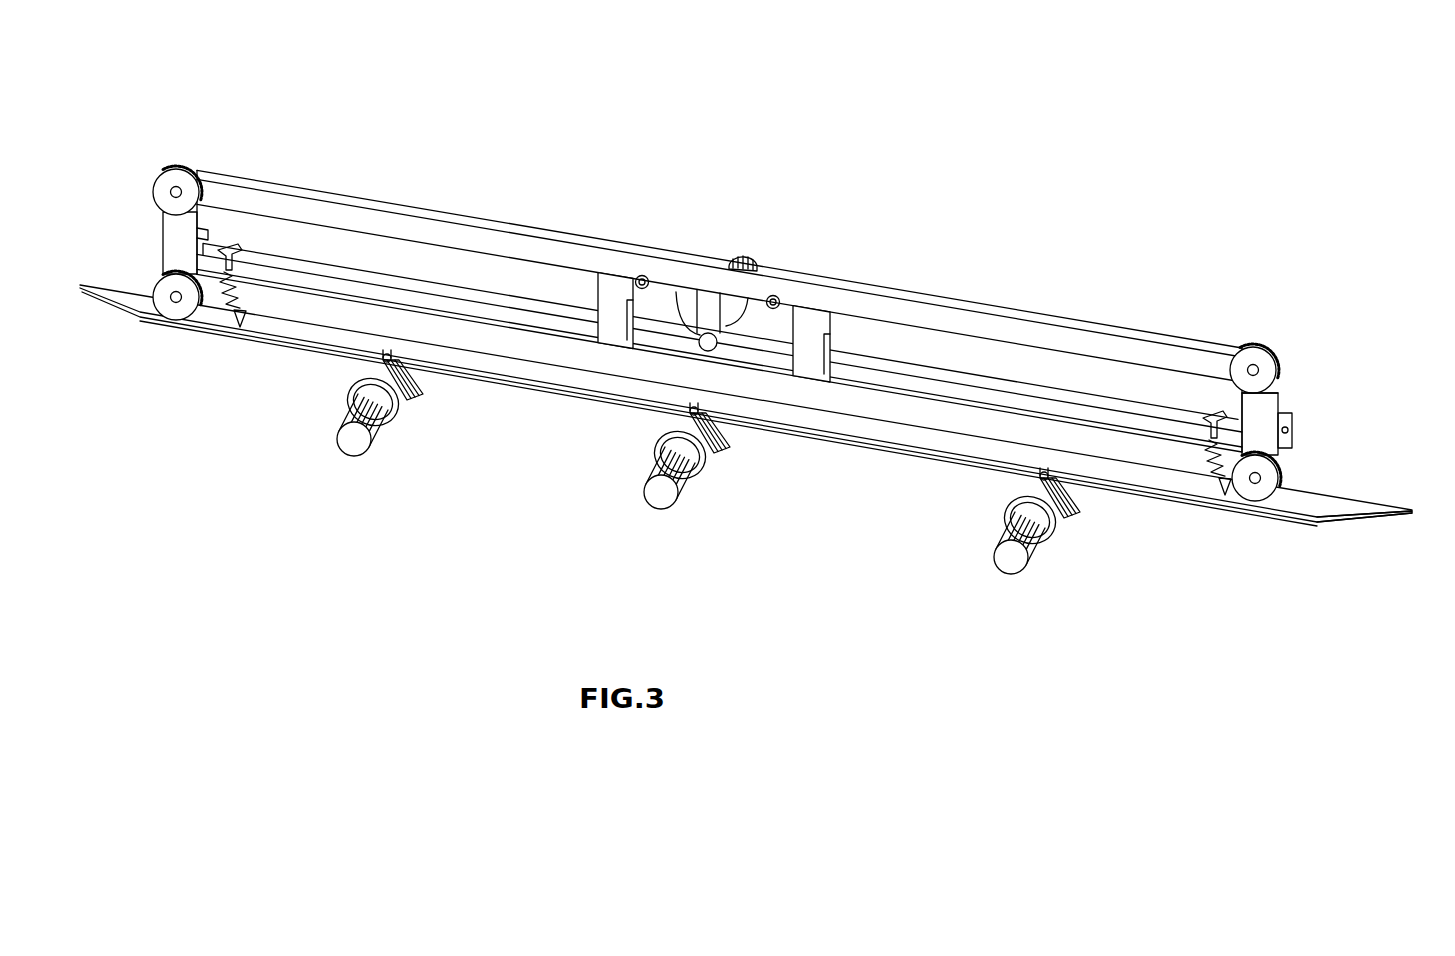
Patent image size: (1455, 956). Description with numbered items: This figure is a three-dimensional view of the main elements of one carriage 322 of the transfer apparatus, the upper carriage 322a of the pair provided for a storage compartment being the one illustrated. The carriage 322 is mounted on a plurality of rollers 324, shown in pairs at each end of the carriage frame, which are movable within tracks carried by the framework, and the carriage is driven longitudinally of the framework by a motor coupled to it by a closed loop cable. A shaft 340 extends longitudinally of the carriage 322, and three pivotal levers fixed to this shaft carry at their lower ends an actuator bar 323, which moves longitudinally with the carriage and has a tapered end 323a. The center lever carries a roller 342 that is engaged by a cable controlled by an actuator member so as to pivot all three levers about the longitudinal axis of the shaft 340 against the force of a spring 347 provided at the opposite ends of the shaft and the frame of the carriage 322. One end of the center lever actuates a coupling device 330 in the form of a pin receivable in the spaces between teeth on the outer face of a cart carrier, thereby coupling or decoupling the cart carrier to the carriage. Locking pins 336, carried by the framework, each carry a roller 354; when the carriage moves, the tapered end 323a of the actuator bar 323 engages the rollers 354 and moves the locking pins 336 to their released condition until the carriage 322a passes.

The carriage 322 is at (935, 296).
The upper carriage 322a is at (1226, 308).
The actuator bar 323 is at (1303, 508).
The tapered end 323a is at (1368, 513).
The rollers 324 is at (178, 186).
The coupling device 330 is at (760, 258).
The locking pins 336 is at (412, 392).
The shaft 340 is at (1025, 378).
The roller 342 is at (708, 336).
The spring 347 is at (247, 297).
The roller 354 is at (387, 370).